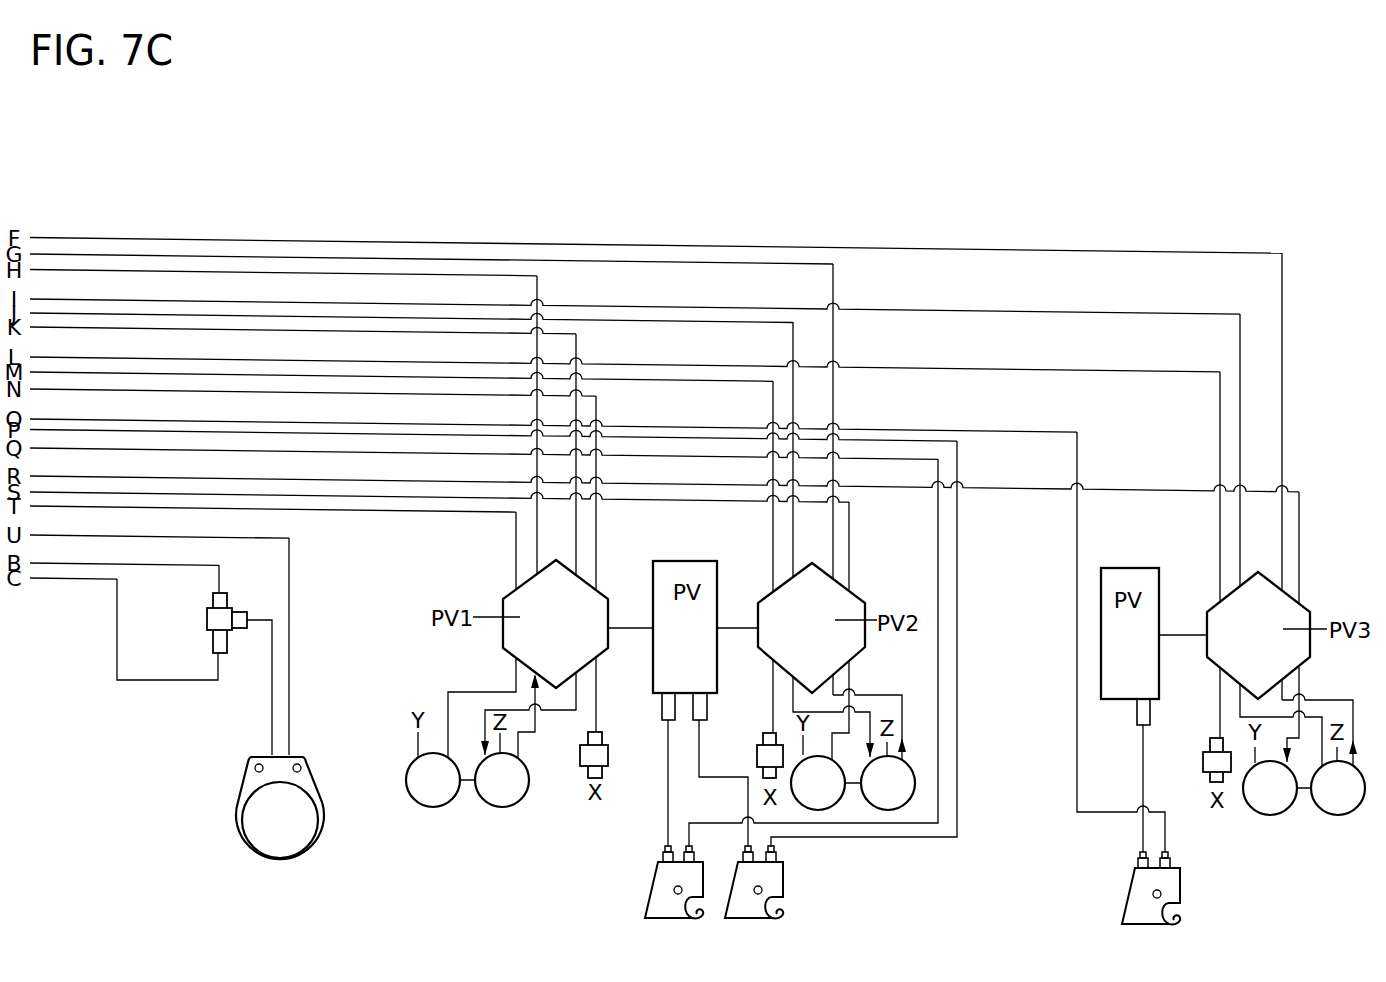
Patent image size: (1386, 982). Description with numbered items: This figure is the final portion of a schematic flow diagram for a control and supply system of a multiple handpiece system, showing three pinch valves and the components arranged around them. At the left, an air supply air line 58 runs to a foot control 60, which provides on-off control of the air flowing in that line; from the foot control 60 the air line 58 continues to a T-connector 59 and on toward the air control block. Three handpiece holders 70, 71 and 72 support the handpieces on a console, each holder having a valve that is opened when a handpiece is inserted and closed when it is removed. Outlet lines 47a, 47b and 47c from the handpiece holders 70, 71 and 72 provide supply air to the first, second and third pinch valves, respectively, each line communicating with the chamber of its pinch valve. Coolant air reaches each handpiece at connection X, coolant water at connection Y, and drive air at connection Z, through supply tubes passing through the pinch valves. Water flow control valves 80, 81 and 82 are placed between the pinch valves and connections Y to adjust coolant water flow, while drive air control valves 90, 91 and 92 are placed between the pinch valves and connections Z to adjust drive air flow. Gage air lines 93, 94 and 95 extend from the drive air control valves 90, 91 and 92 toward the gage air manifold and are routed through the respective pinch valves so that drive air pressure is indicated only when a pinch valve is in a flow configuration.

The outlet line 47a is at (667, 805).
The outlet line 47b is at (700, 733).
The outlet line 47c is at (1143, 737).
The air supply air line 58 is at (289, 583).
The T-connector 59 is at (207, 617).
The foot control 60 is at (272, 813).
The handpiece holder 70 is at (663, 896).
The handpiece holder 71 is at (783, 896).
The handpiece holder 72 is at (1180, 900).
The water flow control valve 80 is at (428, 793).
The water flow control valve 81 is at (813, 796).
The water flow control valve 82 is at (1264, 800).
The drive air control valve 90 is at (502, 793).
The drive air control valve 91 is at (885, 796).
The drive air control valve 92 is at (1335, 800).
The gage air line 93 is at (519, 742).
The gage air line 94 is at (867, 695).
The gage air line 95 is at (1318, 700).